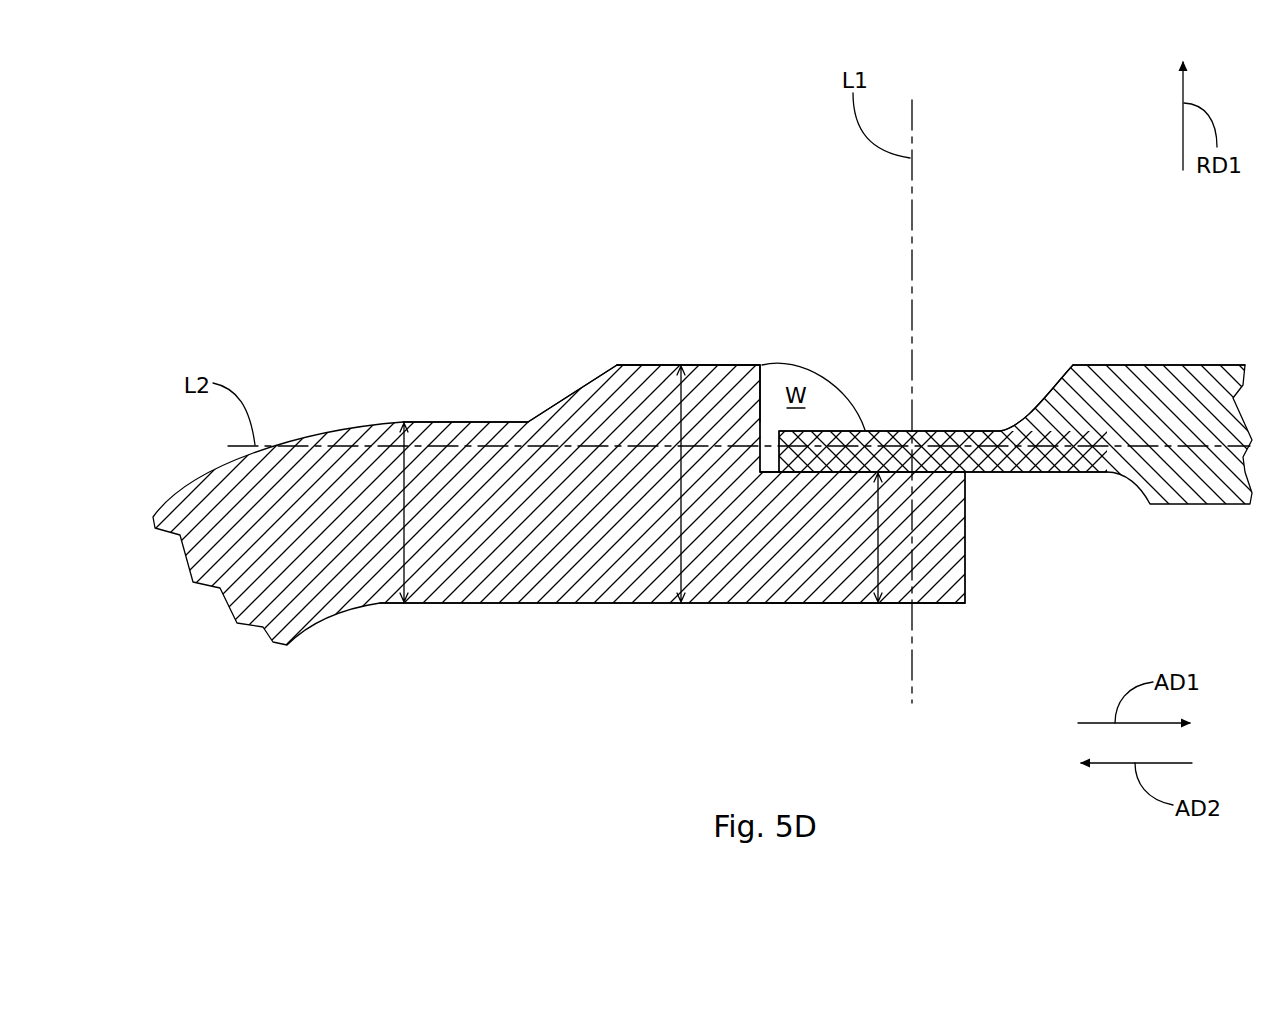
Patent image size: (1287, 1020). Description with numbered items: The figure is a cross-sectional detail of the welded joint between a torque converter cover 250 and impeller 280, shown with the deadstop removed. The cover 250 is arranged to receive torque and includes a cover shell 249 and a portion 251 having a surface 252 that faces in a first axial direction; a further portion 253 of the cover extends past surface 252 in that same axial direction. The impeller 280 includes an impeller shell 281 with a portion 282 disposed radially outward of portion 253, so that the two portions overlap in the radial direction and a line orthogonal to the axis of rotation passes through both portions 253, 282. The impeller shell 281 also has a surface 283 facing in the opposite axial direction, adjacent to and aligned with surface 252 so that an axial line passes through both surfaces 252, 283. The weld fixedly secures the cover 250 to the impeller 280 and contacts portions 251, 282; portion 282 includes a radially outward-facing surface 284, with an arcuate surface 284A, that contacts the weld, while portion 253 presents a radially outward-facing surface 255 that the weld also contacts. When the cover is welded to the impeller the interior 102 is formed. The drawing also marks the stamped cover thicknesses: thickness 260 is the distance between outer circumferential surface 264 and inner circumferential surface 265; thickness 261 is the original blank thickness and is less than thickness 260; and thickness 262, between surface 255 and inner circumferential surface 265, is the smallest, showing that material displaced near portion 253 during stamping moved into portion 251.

The interior 102 is at (564, 662).
The cover shell 249 is at (447, 420).
The cover 250 is at (453, 302).
The portion 251 is at (654, 392).
The surface 252 is at (762, 402).
The portion 253 is at (830, 567).
The surface 255 is at (767, 473).
The thickness 260 is at (683, 497).
The thickness 261 is at (406, 532).
The thickness 262 is at (878, 530).
The outer circumferential surface 264 is at (736, 365).
The inner circumferential surface 265 is at (638, 603).
The impeller 280 is at (980, 250).
The impeller shell 281 is at (1122, 363).
The portion 282 is at (933, 463).
The surface 283 is at (760, 437).
The surface 284 is at (967, 430).
The arcuate surface 284A is at (1035, 408).